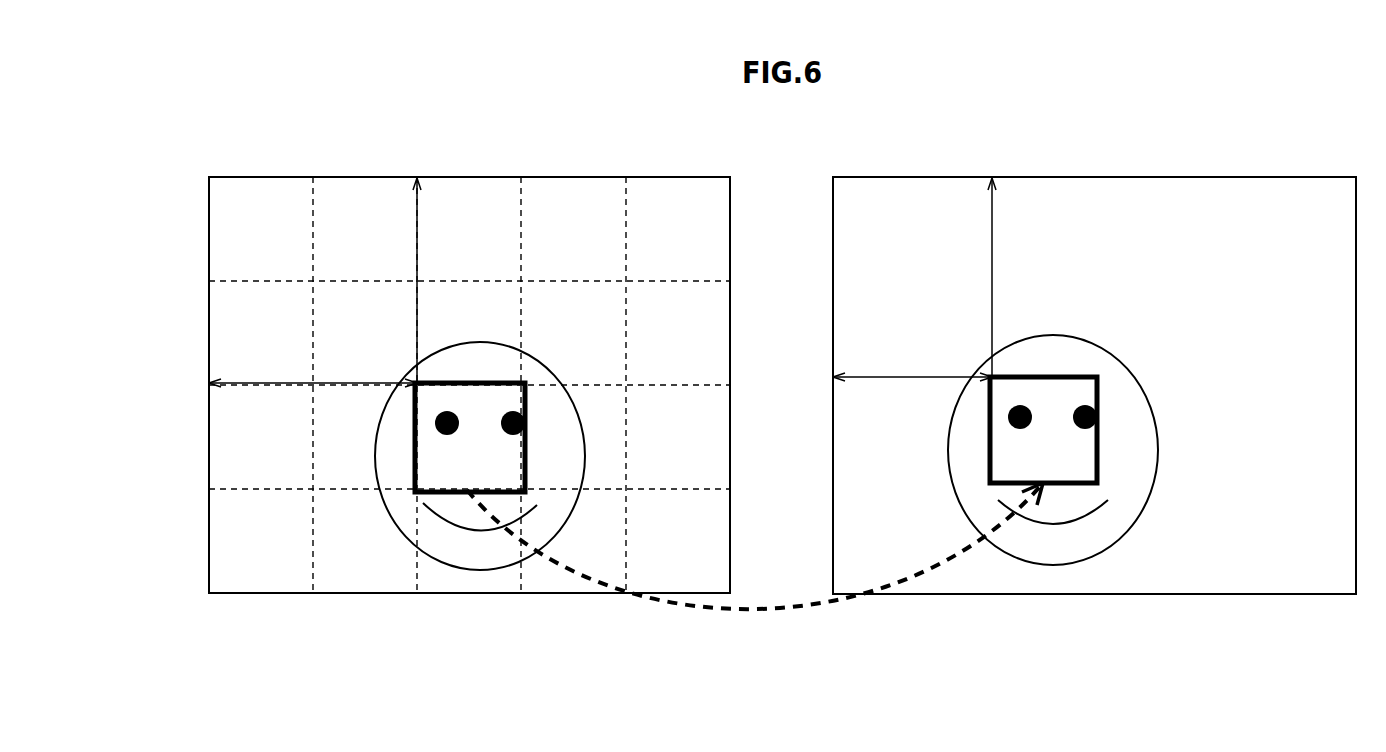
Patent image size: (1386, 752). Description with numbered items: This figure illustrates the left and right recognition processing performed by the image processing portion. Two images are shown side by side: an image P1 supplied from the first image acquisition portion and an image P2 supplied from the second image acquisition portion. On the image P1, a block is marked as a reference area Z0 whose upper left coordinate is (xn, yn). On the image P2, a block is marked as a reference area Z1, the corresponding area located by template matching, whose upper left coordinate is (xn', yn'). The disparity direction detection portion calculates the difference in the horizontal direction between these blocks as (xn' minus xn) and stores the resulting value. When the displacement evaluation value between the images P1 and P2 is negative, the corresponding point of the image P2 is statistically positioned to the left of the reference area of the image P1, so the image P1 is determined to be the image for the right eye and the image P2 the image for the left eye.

The image P1 is at (468, 177).
The image P2 is at (1095, 177).
The reference area Z0 is at (415, 457).
The reference area Z1 is at (1097, 452).